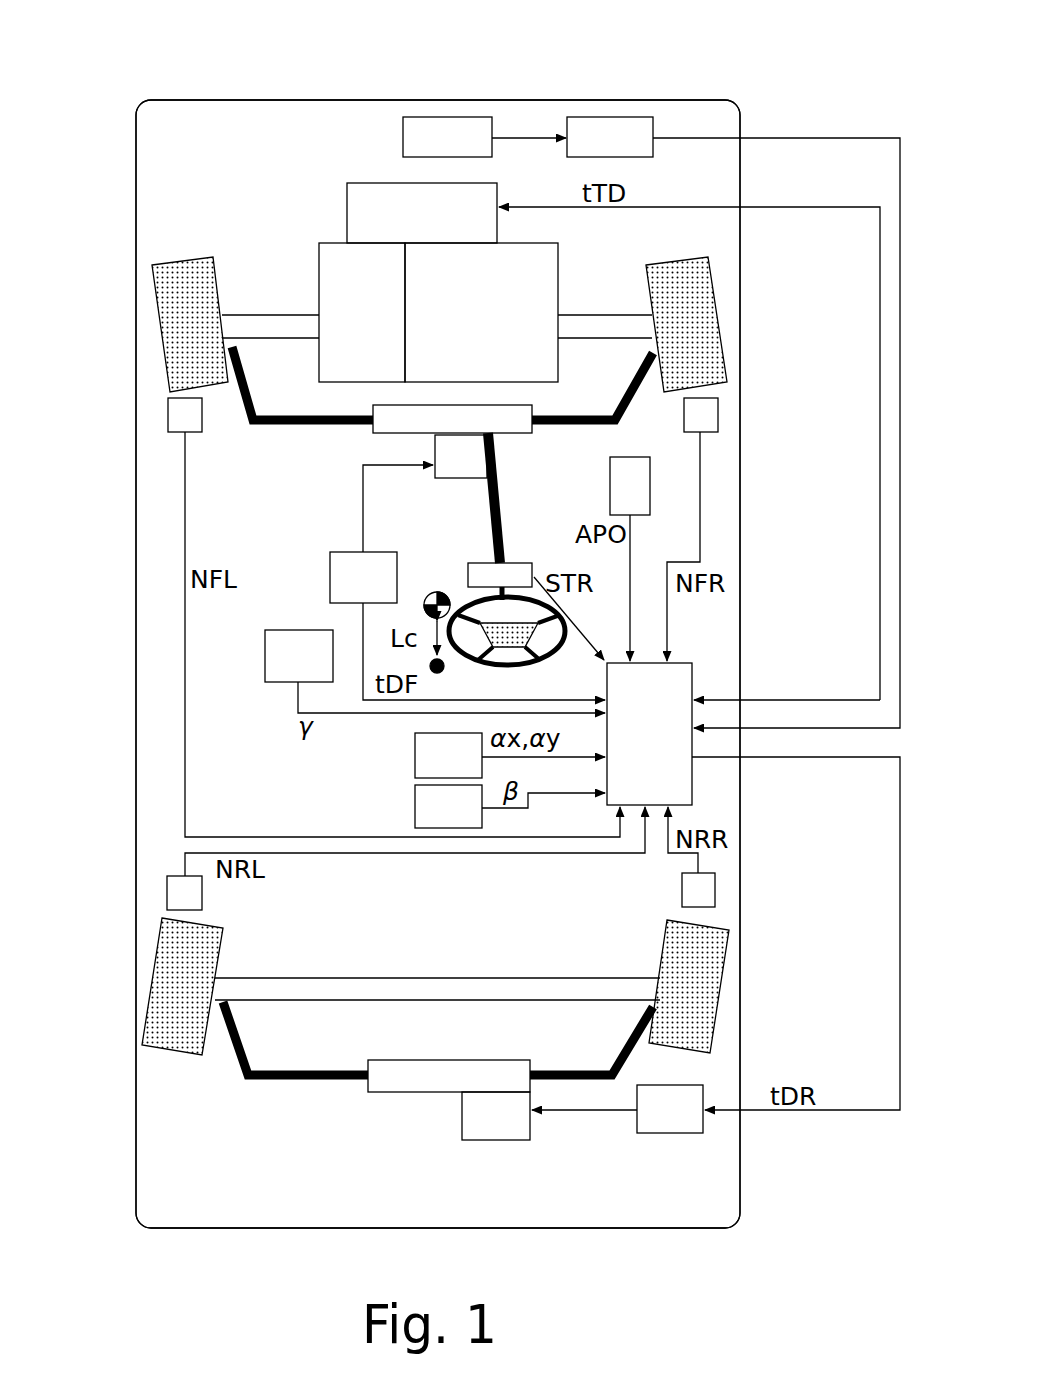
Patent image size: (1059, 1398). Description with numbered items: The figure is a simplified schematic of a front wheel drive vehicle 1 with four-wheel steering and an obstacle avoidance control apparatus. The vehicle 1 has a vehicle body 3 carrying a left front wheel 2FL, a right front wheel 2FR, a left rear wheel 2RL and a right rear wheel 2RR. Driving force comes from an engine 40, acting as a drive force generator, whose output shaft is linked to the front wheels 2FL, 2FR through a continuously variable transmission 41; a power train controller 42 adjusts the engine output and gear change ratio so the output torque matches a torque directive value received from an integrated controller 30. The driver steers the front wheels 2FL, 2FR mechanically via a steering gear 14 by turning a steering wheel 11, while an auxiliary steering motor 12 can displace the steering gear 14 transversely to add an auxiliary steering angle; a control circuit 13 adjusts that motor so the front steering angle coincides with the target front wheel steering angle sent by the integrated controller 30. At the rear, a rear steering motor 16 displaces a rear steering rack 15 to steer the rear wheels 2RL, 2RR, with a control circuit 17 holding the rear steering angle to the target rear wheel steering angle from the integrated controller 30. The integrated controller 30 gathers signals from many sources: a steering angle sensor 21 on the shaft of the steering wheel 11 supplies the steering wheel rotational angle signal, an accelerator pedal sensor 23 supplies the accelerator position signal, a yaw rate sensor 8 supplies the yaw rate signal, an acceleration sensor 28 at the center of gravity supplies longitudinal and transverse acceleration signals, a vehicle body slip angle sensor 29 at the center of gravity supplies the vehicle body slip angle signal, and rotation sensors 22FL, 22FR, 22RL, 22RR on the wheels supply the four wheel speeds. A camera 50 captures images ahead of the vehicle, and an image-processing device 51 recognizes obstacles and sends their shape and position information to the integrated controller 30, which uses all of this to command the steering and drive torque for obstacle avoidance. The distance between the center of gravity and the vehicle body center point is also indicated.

The front wheel drive vehicle 1 is at (676, 94).
The vehicle body 3 is at (222, 100).
The left front wheel 2FL is at (152, 282).
The right front wheel 2FR is at (713, 290).
The left rear wheel 2RL is at (147, 990).
The right rear wheel 2RR is at (710, 1013).
The rotation sensor 22FL is at (168, 417).
The rotation sensor 22FR is at (718, 417).
The rotation sensor 22RL is at (167, 893).
The rotation sensor 22RR is at (715, 888).
The yaw rate sensor 8 is at (299, 656).
The steering wheel 11 is at (552, 657).
The auxiliary steering motor 12 is at (461, 456).
The control circuit 13 is at (363, 577).
The steering gear 14 is at (373, 433).
The rear steering rack 15 is at (283, 1080).
The rear steering motor 16 is at (496, 1116).
The control circuit 17 is at (670, 1109).
The steering angle sensor 21 is at (475, 563).
The accelerator pedal sensor 23 is at (610, 480).
The acceleration sensor 28 is at (448, 755).
The vehicle body slip angle sensor 29 is at (448, 806).
The integrated controller 30 is at (649, 734).
The engine 40 is at (481, 312).
The continuously variable transmission 41 is at (362, 312).
The power train controller 42 is at (422, 213).
The camera 50 is at (447, 137).
The image-processing device 51 is at (610, 137).